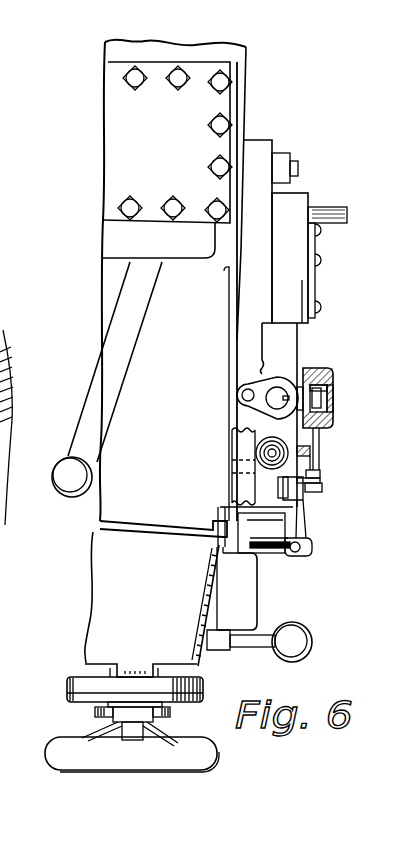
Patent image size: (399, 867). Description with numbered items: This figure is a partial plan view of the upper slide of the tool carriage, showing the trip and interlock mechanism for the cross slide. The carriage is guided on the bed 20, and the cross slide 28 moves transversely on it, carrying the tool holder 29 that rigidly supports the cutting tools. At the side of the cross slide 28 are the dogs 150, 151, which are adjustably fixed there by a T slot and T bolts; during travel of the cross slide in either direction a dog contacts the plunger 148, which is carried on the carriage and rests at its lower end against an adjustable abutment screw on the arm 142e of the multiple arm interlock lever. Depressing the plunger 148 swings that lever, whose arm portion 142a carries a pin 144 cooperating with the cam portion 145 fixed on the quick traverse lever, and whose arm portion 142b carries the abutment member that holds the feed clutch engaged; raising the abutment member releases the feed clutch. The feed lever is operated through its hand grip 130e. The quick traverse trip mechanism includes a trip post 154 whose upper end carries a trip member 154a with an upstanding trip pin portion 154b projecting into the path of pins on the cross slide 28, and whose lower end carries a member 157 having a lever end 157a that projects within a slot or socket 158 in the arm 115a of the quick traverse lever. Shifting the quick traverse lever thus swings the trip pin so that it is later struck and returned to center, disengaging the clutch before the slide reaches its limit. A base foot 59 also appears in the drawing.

The bed 20 is at (7, 392).
The cross slide 28 is at (103, 297).
The tool holder 29 is at (108, 224).
The base foot 59 is at (55, 748).
The arm 115a is at (333, 392).
The hand grip 130e is at (288, 640).
The arm portion 142a is at (310, 493).
The arm portion 142b is at (247, 552).
The arm 142e is at (320, 479).
The pin 144 is at (323, 488).
The cam portion 145 is at (310, 463).
The plunger 148 is at (283, 446).
The dog 150 is at (300, 500).
The dog 151 is at (281, 165).
The trip post 154 is at (235, 396).
The trip member 154a is at (258, 380).
The trip pin portion 154b is at (241, 397).
The member 157 is at (312, 368).
The lever end 157a is at (326, 381).
The slot or socket 158 is at (322, 409).